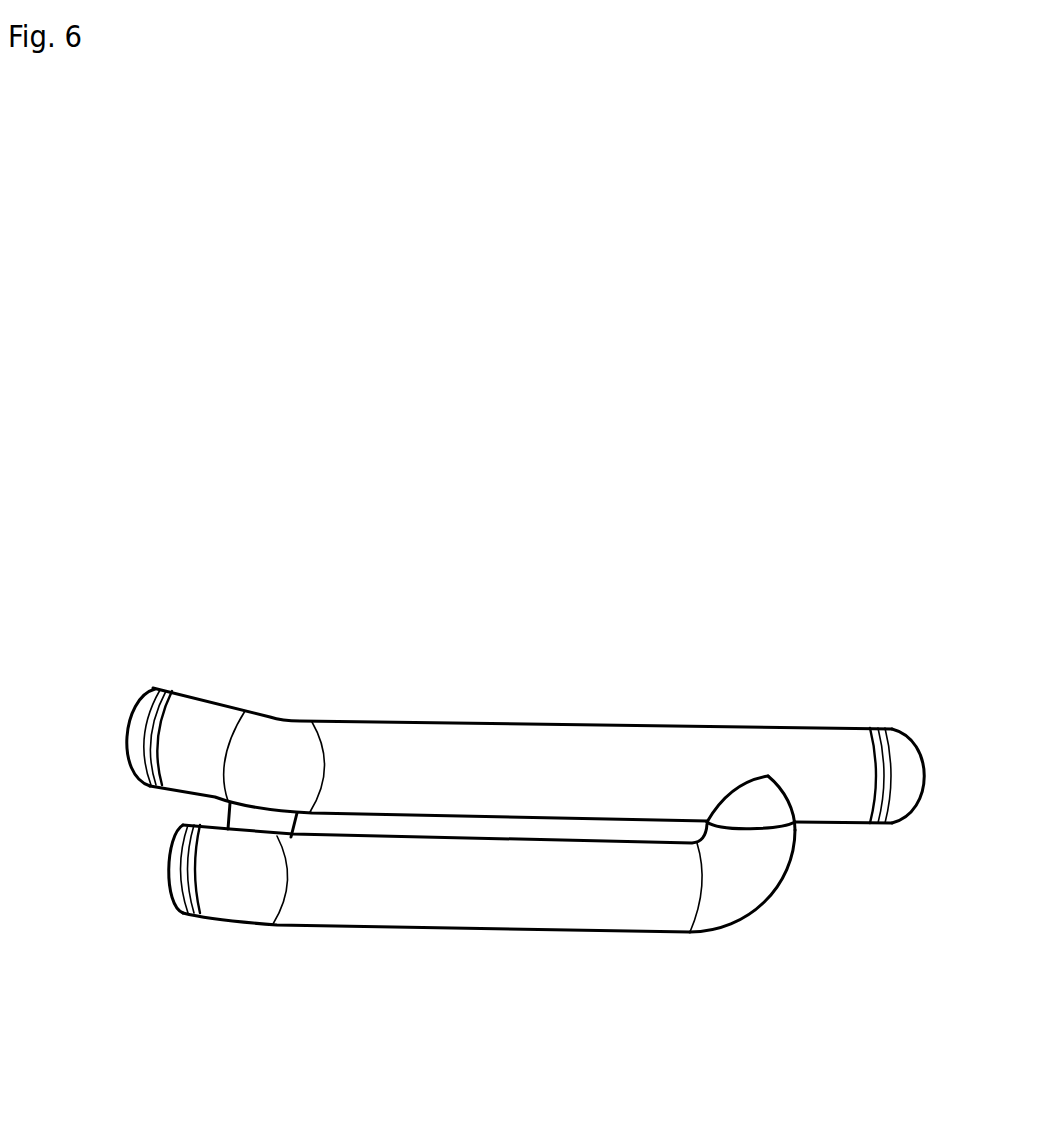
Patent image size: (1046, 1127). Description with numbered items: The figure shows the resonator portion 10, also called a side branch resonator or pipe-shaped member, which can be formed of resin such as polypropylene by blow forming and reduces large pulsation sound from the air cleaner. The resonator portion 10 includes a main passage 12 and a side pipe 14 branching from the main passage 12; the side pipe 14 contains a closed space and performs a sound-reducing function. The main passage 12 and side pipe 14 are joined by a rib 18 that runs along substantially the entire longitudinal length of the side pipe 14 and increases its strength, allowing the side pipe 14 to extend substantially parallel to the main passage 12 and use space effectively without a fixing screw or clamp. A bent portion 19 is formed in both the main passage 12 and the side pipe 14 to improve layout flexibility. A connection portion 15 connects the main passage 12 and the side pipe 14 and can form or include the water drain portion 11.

The resonator portion 10 is at (647, 710).
The water drain portion 11 is at (751, 803).
The main passage 12 is at (542, 748).
The side pipe 14 is at (477, 907).
The connection portion 15 is at (768, 808).
The rib 18 is at (430, 828).
The bent portion 19 is at (287, 752).